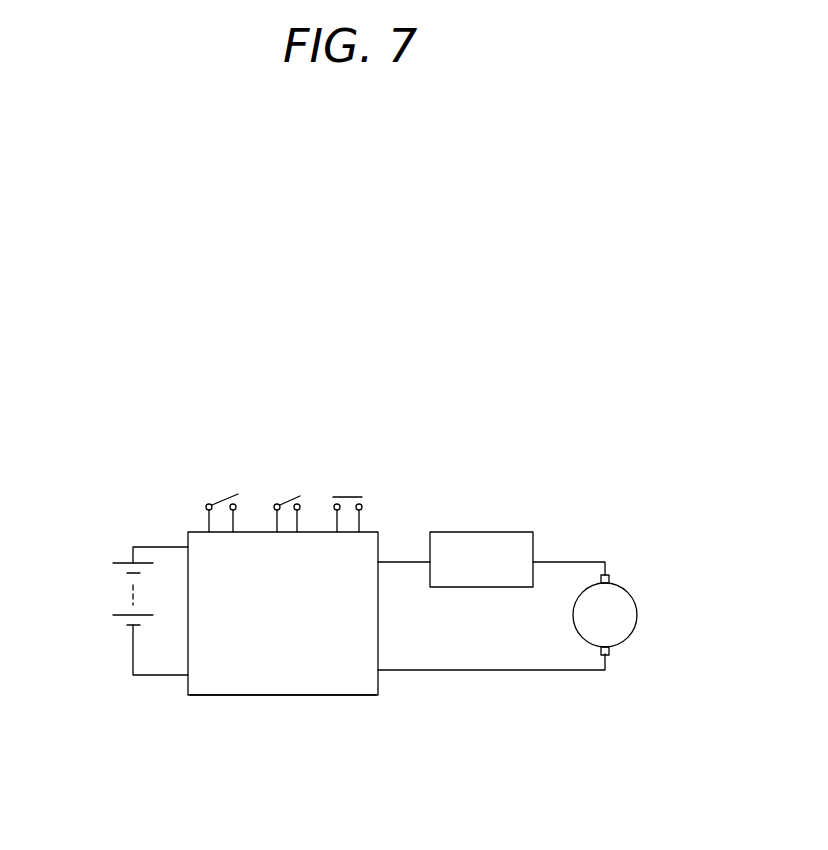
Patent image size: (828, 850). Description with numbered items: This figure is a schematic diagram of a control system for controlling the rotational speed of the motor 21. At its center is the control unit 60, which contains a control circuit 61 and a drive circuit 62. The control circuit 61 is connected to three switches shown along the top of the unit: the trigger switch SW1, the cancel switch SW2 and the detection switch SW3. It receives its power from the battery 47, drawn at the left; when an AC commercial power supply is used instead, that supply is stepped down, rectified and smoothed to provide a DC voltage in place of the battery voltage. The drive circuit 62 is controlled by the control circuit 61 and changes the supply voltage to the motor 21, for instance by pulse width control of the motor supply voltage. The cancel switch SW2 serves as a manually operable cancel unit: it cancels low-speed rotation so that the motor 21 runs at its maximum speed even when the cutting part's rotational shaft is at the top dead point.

The control unit 60 is at (317, 714).
The control circuit 61 is at (248, 697).
The battery 47 is at (115, 583).
The drive circuit 62 is at (473, 532).
The motor 21 is at (637, 625).
The trigger switch SW1 is at (210, 502).
The cancel switch SW2 is at (285, 495).
The detection switch SW3 is at (347, 492).